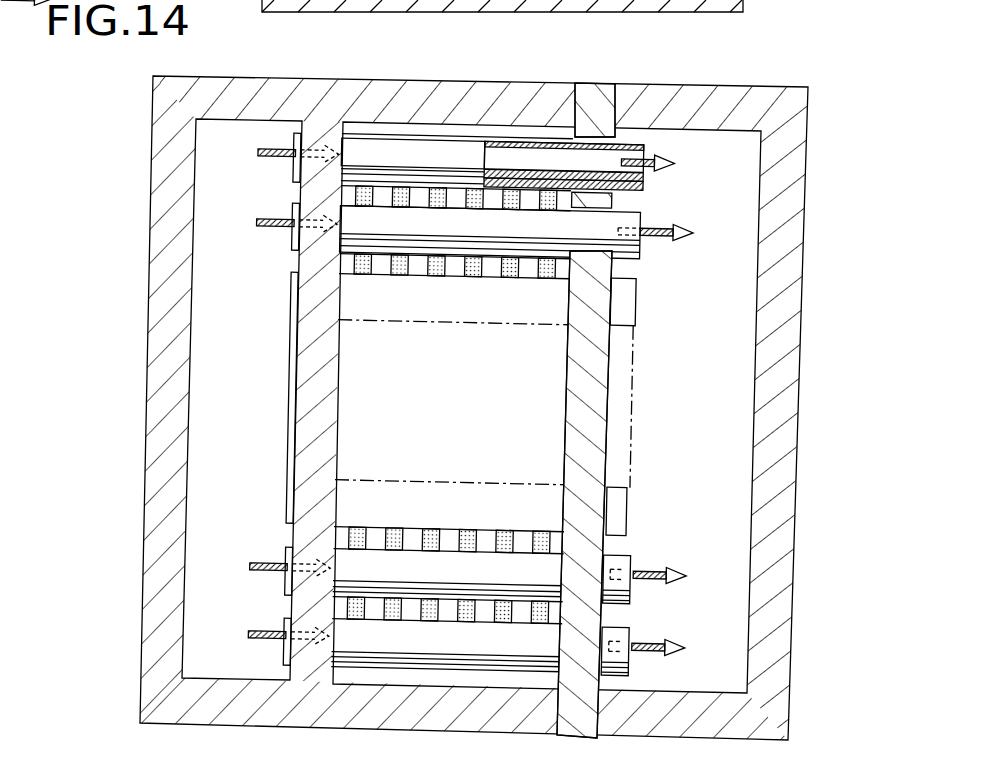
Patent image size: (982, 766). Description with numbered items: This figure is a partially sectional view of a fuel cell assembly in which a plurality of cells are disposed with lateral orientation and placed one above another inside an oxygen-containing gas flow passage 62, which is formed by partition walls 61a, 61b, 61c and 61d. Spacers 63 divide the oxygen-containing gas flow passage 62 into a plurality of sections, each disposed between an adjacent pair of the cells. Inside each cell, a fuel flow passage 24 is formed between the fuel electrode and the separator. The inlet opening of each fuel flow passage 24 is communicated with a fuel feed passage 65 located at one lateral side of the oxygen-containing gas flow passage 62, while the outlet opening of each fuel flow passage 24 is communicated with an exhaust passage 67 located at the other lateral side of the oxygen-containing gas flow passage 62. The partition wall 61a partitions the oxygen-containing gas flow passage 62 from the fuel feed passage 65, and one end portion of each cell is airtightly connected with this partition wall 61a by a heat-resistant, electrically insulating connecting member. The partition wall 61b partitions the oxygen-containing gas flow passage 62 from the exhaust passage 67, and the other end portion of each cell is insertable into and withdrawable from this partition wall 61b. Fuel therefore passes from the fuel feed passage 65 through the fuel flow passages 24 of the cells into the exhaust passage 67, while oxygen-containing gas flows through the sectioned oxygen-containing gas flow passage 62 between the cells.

The fuel flow passage 24 is at (505, 158).
The partition wall 61a is at (338, 404).
The partition wall 61b is at (565, 452).
The partition wall 61c is at (530, 80).
The partition wall 61d is at (470, 738).
The oxygen-containing gas flow passage 62 is at (493, 272).
The spacer 63 is at (396, 276).
The fuel feed passage 65 is at (270, 399).
The exhaust passage 67 is at (364, 338).